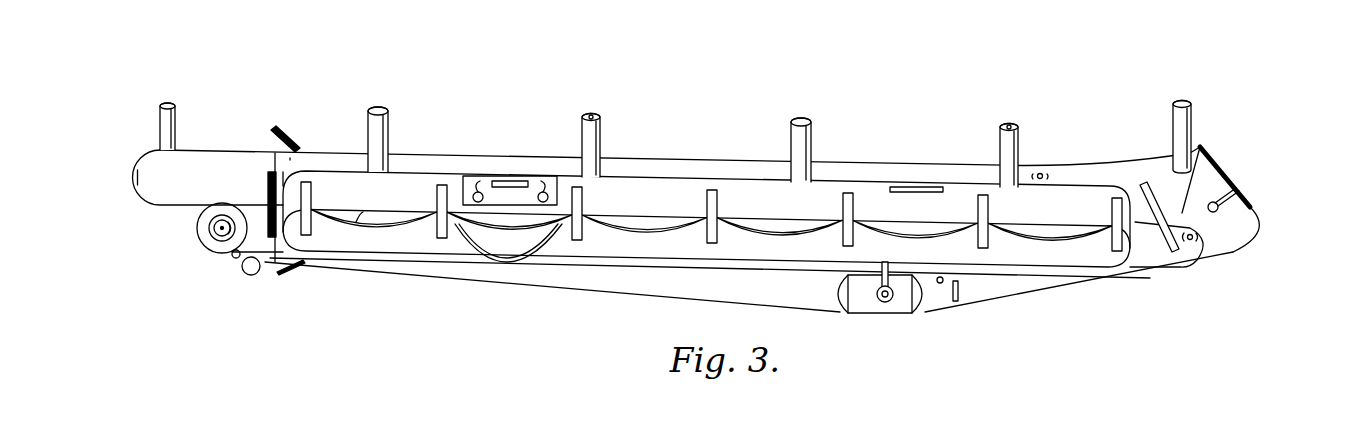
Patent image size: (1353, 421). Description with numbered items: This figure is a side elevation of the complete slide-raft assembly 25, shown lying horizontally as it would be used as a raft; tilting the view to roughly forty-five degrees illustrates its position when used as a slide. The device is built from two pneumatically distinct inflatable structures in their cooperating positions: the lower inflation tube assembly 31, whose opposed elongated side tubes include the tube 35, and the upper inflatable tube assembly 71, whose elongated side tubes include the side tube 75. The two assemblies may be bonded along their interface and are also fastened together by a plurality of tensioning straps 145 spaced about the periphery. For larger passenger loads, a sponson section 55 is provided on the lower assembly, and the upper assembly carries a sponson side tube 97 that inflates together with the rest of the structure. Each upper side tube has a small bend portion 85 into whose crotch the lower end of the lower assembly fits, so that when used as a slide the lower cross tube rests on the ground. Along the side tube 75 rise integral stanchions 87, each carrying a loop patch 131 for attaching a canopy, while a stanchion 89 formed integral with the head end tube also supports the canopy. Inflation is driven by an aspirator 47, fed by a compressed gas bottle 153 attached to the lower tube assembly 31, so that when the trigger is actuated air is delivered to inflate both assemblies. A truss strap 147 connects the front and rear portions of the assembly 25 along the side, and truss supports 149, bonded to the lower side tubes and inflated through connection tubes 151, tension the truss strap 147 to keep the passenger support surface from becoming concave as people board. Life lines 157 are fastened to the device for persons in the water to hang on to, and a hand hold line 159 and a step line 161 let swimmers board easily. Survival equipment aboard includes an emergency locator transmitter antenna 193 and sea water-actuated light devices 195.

The complete assembly 25 is at (246, 126).
The lower inflation tube assembly 31 is at (1160, 281).
The elongated tube 35 is at (1192, 262).
The aspirator 47 is at (208, 243).
The sponson section 55 is at (1072, 255).
The upper inflatable tube assembly 71 is at (1232, 160).
The side tube 75 is at (718, 158).
The bend portion 85 is at (1200, 147).
The stanchion 87 is at (386, 138).
The stanchion 89 is at (171, 128).
The side tube 97 is at (637, 183).
The loop patch 131 is at (599, 112).
The tensioning strap 145 is at (311, 200).
The truss strap 147 is at (608, 295).
The truss support 149 is at (890, 314).
The connection tube 151 is at (879, 275).
The compressed gas bottle 153 is at (250, 274).
The life line 157 is at (356, 222).
The hand hold line 159 is at (542, 176).
The step line 161 is at (508, 270).
The emergency locator transmitter antenna 193 is at (300, 139).
The sea water-actuated light device 195 is at (960, 292).